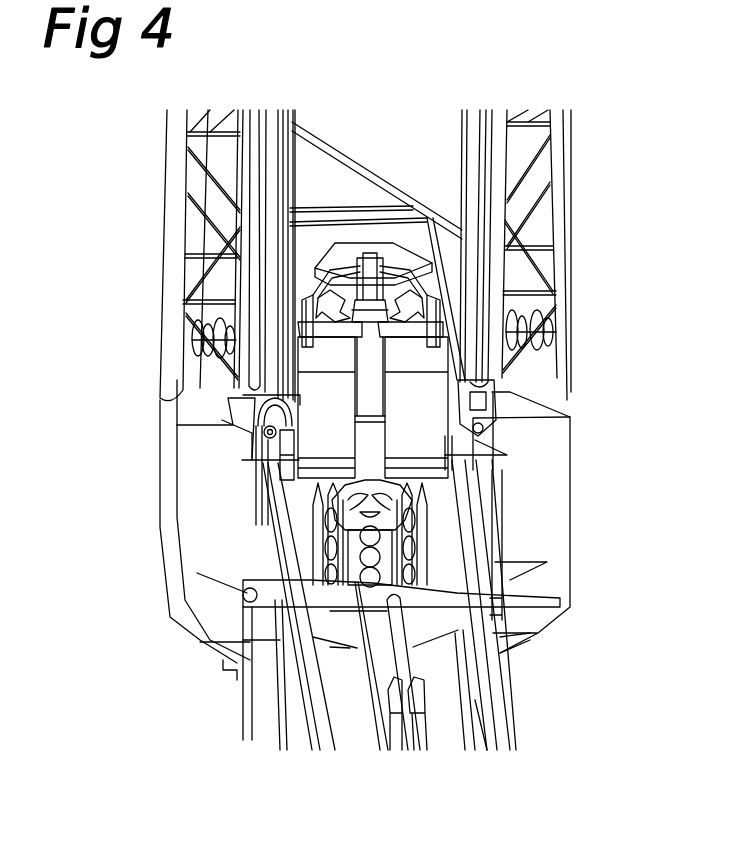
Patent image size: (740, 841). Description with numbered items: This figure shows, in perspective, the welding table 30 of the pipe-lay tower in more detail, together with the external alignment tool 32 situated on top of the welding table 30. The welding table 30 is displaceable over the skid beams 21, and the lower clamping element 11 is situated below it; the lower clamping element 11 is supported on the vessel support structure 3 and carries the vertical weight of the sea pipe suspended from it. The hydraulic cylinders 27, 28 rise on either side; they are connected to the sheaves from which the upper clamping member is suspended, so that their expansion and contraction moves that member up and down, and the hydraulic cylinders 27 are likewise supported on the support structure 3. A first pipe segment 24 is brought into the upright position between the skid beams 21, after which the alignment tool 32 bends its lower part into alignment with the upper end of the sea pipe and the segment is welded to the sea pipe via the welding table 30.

The vessel support structure 3 is at (185, 510).
The lower clamping element 11 is at (372, 548).
The skid beams 21 is at (500, 718).
The first pipe segment 24 is at (417, 752).
The hydraulic cylinder 27 is at (462, 190).
The hydraulic cylinder 28 is at (283, 186).
The welding table 30 is at (470, 458).
The external alignment tool 32 is at (417, 263).